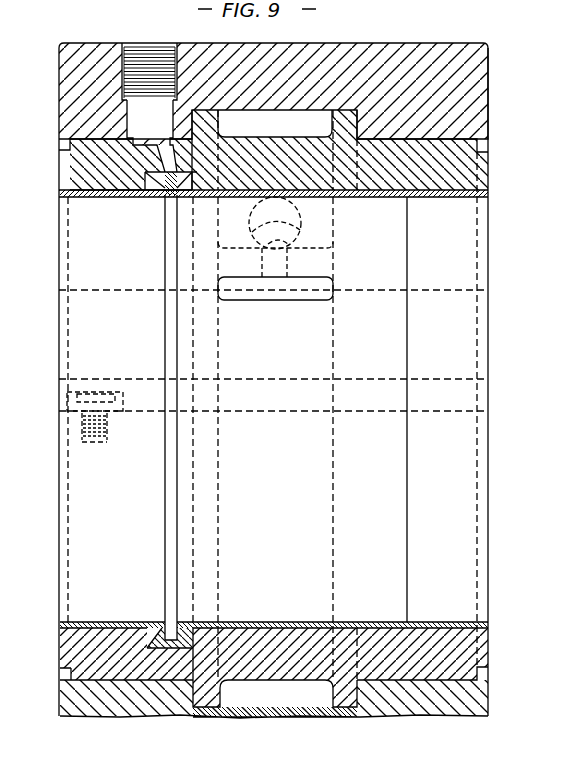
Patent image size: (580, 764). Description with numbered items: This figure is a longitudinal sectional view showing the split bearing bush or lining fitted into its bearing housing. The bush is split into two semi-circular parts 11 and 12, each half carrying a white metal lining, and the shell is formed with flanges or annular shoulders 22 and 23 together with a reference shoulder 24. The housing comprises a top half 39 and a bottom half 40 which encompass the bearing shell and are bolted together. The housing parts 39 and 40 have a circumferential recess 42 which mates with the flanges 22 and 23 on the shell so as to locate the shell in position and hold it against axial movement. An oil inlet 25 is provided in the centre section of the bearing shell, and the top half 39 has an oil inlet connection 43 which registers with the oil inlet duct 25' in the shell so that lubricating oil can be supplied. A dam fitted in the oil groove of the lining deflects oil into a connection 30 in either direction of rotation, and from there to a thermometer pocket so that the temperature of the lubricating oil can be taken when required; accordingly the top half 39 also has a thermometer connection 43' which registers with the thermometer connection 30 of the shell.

The semi-circular part 11 is at (77, 157).
The semi-circular part 12 is at (475, 642).
The flange 22 is at (207, 118).
The flange 23 is at (345, 117).
The reference shoulder 24 is at (488, 143).
The oil inlet 25 is at (275, 306).
The oil inlet duct 25' is at (292, 262).
The thermometer connection 30 is at (158, 151).
The top half 39 is at (452, 47).
The bottom half 40 is at (473, 692).
The circumferential recess 42 is at (258, 700).
The oil inlet connection 43 is at (303, 223).
The thermometer connection 43' is at (149, 55).